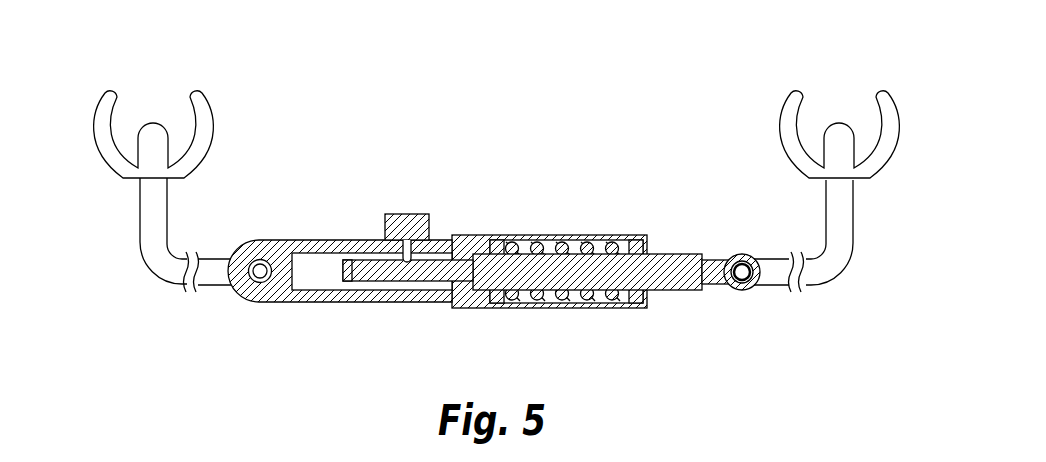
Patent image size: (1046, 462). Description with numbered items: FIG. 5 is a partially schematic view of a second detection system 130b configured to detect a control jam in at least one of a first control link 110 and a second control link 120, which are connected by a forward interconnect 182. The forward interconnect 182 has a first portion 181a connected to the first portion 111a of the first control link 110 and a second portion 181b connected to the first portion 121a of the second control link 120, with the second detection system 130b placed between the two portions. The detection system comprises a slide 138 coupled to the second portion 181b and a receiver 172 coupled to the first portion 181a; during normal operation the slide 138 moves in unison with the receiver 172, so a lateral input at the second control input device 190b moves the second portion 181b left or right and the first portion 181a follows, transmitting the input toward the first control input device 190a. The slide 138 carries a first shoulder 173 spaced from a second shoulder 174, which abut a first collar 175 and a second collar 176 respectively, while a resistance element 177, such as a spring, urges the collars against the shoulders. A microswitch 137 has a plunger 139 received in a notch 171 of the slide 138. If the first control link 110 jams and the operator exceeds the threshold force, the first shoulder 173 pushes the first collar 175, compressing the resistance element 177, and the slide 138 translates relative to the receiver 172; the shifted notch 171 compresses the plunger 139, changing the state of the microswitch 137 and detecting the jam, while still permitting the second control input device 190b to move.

The first control link 110 is at (120, 213).
The first portion of the first control link 111a is at (143, 285).
The second control link 120 is at (875, 207).
The first portion of the second control link 121a is at (855, 287).
The second detection system 130b is at (396, 201).
The microswitch 137 is at (384, 213).
The slide 138 is at (342, 268).
The plunger 139 is at (402, 261).
The notch 171 is at (408, 288).
The receiver 172 is at (352, 303).
The first shoulder 173 is at (470, 306).
The second shoulder 174 is at (652, 293).
The first collar 175 is at (500, 242).
The second collar 176 is at (626, 241).
The resistance element 177 is at (574, 242).
The first portion of the forward interconnect 181a is at (216, 287).
The second portion of the forward interconnect 181b is at (778, 287).
The forward interconnect 182 is at (485, 217).
The first control input device 190a is at (158, 122).
The second control input device 190b is at (842, 121).